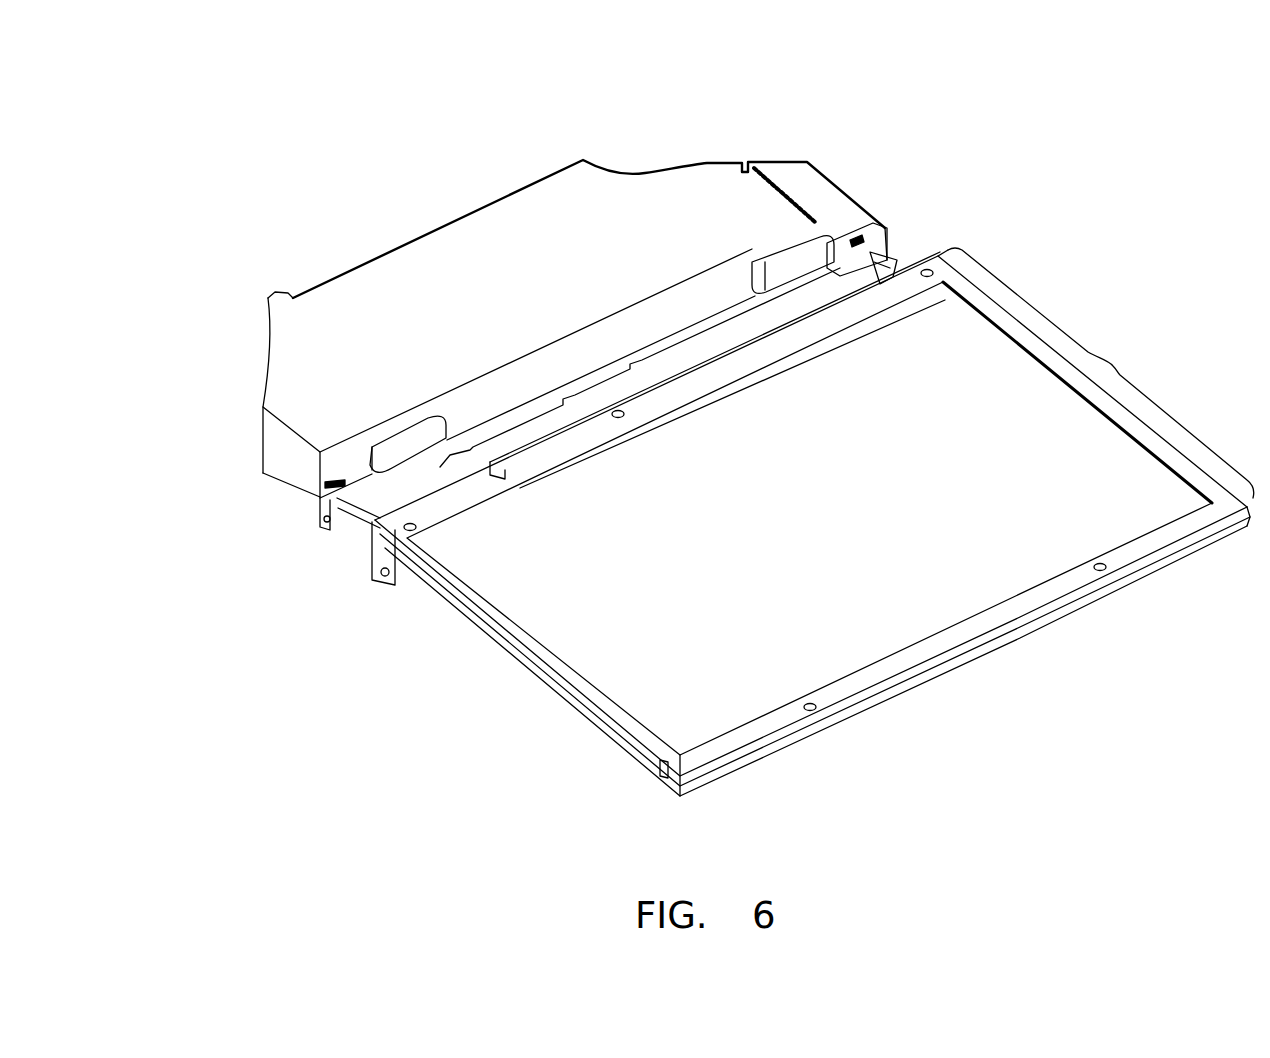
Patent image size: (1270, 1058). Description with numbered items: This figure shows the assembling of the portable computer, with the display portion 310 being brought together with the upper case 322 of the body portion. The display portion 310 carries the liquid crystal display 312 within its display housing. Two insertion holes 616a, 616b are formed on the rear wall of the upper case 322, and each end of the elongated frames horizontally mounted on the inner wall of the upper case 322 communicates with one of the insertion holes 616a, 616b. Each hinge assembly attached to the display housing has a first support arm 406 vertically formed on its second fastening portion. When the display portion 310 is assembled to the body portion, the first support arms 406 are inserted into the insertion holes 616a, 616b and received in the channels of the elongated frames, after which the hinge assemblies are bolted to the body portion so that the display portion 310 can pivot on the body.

The upper case 322 is at (793, 177).
The display portion 310 is at (1112, 365).
The liquid crystal display (LCD) 312 is at (1133, 505).
The insertion hole 616a is at (320, 485).
The insertion hole 616b is at (857, 237).
The first support arm 406 is at (893, 250).